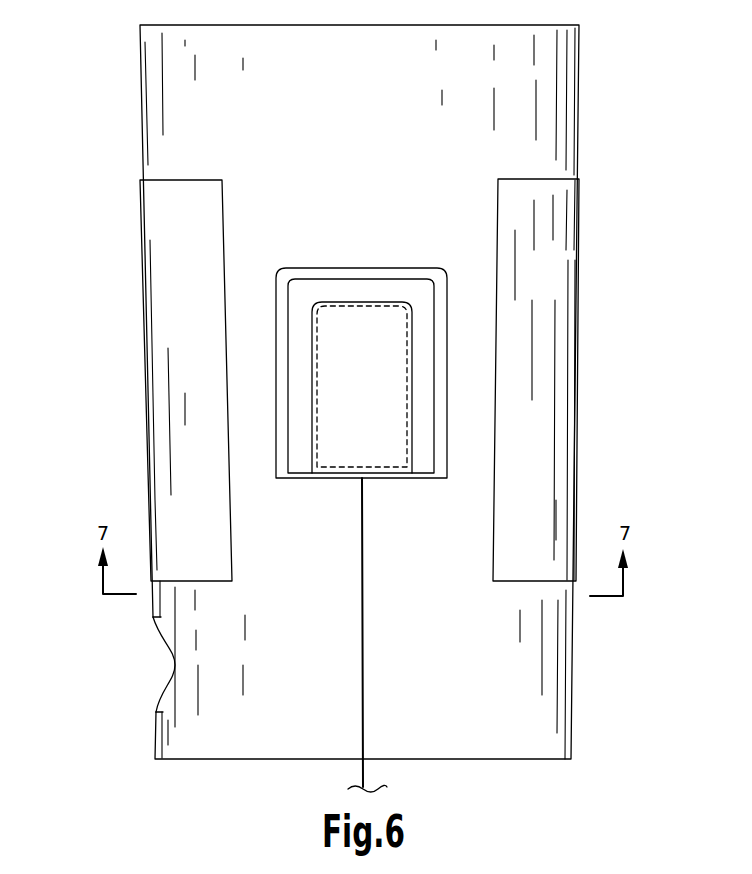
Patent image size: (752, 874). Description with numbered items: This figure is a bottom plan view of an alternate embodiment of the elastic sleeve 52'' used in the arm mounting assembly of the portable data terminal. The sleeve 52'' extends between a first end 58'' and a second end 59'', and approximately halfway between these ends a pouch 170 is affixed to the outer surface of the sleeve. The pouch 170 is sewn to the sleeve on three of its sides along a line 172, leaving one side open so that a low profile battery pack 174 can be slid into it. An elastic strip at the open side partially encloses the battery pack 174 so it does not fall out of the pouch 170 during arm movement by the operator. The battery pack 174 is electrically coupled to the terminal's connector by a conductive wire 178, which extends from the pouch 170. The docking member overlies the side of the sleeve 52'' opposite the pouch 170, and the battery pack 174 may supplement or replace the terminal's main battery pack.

The elastic sleeve 52'' is at (300, 392).
The second end of the sleeve 59'' is at (149, 51).
The first end of the sleeve 58'' is at (153, 669).
The pouch 170 is at (363, 290).
The line 172 is at (311, 279).
The battery pack 174 is at (368, 383).
The conductive wire 178 is at (363, 648).